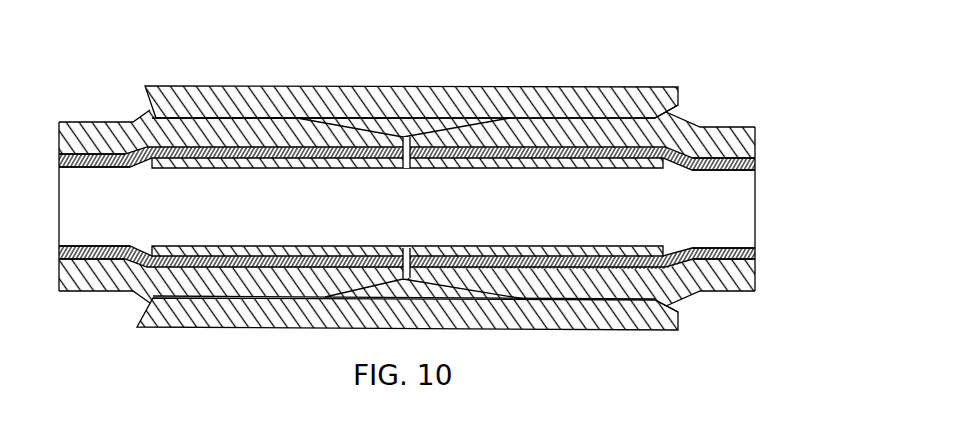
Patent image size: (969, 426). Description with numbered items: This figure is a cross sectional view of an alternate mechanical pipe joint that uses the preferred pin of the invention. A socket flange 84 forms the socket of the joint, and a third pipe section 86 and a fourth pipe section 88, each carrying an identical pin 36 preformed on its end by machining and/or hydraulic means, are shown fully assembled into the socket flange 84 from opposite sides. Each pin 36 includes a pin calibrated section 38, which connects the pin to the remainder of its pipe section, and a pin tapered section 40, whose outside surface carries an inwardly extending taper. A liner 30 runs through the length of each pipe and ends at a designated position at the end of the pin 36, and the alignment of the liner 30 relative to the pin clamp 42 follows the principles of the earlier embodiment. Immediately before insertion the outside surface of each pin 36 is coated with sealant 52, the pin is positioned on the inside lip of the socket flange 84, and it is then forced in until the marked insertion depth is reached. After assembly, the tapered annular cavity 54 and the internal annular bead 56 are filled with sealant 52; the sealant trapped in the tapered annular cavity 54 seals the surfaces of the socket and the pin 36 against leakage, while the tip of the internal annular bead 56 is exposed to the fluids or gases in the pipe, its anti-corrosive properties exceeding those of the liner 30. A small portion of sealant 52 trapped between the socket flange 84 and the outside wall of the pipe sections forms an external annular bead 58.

The liner 30 is at (508, 152).
The pin 36 is at (267, 106).
The pin calibrated section 38 is at (197, 118).
The pin tapered section 40 is at (361, 130).
The pin clamp 42 is at (582, 162).
The sealant 52 is at (405, 280).
The tapered annular cavity 54 is at (459, 127).
The internal annular bead 56 is at (405, 135).
The external annular bead 58 is at (689, 112).
The socket flange 84 is at (313, 88).
The third pipe section 86 is at (83, 122).
The fourth pipe section 88 is at (737, 127).